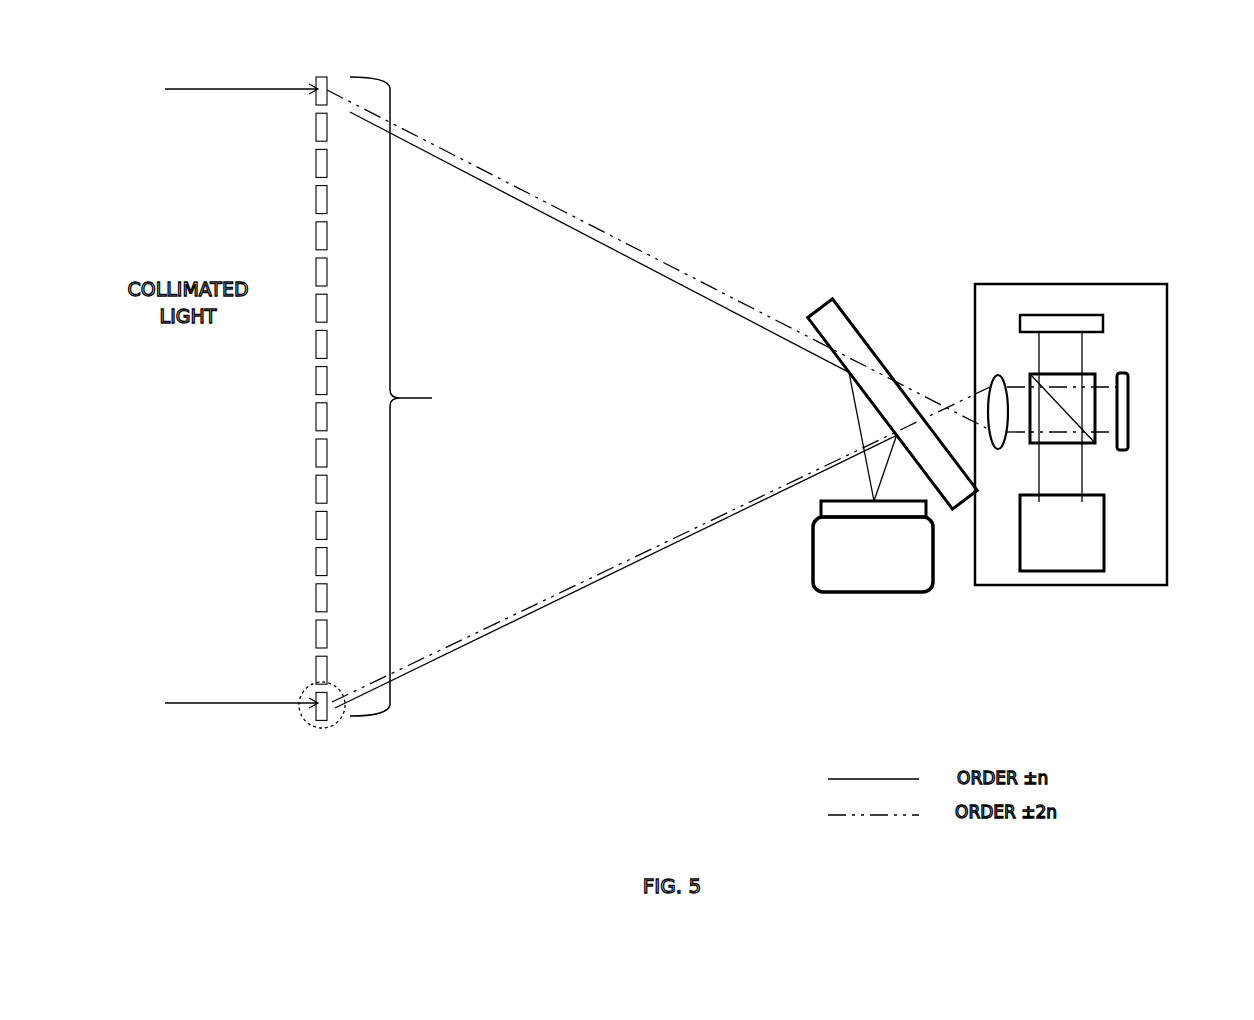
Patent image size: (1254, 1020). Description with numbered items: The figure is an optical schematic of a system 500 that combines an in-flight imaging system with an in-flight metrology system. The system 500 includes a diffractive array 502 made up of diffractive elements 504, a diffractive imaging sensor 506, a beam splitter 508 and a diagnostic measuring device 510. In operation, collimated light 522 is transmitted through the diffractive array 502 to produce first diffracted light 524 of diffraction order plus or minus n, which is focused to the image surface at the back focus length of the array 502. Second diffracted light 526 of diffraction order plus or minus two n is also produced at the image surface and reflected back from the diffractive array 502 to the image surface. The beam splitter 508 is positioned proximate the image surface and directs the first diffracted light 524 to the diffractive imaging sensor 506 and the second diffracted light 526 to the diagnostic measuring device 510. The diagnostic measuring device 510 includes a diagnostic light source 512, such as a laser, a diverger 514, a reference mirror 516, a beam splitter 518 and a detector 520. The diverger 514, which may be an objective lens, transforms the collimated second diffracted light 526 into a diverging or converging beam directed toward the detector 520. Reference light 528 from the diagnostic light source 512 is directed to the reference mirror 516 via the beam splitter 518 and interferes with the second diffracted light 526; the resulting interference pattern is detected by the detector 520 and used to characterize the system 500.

The system 500 is at (1067, 138).
The diffractive array 502 is at (402, 398).
The diffractive elements 504 is at (334, 724).
The diffractive imaging sensor 506 is at (806, 532).
The beam splitter 508 is at (830, 315).
The diagnostic measuring device 510 is at (1110, 588).
The diagnostic light source 512 is at (1062, 533).
The diverger 514 is at (997, 375).
The reference mirror 516 is at (1060, 315).
The beam splitter 518 is at (1098, 372).
The detector 520 is at (1128, 410).
The collimated light 522 is at (245, 90).
The first diffracted light 524 is at (582, 233).
The second diffracted light 526 is at (645, 252).
The reference light 528 is at (1078, 463).